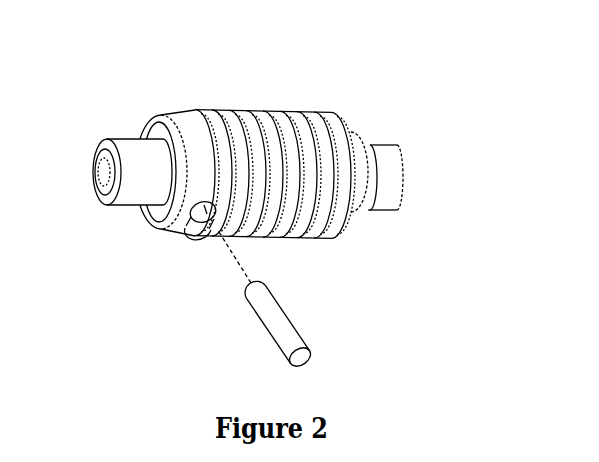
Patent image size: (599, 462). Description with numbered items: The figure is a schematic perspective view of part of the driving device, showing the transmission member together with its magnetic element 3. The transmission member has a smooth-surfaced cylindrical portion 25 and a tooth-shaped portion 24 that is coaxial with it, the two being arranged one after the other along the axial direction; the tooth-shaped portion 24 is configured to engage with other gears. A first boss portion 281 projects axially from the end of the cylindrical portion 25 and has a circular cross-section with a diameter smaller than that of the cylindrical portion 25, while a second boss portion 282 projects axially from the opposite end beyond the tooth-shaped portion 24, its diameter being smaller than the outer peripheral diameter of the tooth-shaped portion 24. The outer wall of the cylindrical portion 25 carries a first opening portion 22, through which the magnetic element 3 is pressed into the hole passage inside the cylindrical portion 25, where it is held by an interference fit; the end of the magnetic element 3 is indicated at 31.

The first boss portion 281 is at (111, 117).
The cylindrical portion 25 is at (188, 127).
The tooth-shaped portion 24 is at (288, 115).
The second boss portion 282 is at (386, 149).
The first opening portion 22 is at (168, 240).
The magnetic element 3 is at (317, 320).
The magnet end face 31 is at (309, 351).